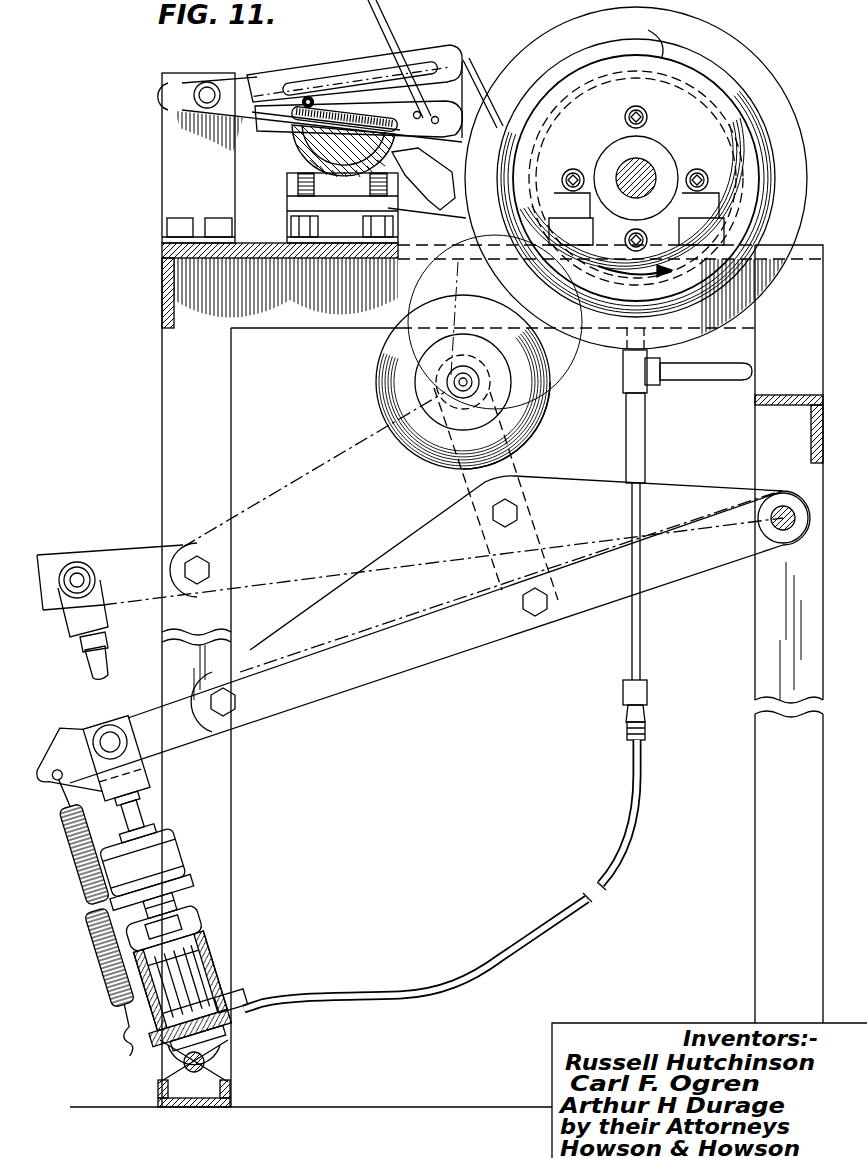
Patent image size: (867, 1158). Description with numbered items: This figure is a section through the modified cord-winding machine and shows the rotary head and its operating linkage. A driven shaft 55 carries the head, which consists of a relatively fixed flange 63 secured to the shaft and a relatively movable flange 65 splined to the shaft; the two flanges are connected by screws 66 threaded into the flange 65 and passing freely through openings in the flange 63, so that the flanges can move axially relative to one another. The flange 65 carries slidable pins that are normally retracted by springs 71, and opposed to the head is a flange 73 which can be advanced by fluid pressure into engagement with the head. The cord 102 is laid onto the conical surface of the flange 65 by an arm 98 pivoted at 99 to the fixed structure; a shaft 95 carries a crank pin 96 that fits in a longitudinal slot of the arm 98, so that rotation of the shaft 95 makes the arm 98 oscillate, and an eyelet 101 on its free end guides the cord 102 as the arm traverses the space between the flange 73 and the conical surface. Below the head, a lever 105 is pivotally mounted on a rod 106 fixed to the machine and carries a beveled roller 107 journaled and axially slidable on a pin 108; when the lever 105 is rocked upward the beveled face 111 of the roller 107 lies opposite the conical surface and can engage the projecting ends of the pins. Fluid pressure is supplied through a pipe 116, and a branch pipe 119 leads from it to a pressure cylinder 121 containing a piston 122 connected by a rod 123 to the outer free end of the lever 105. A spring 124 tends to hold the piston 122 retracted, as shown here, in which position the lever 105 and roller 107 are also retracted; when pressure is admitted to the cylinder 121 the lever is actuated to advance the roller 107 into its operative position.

The shaft 55 is at (644, 170).
The relatively fixed flange 63 is at (598, 129).
The relatively movable flange 65 is at (576, 63).
The screws 66 is at (648, 117).
The springs 71 is at (636, 163).
The flange 73 is at (732, 58).
The shaft 95 is at (318, 157).
The crank pin 96 is at (308, 96).
The arm 98 is at (242, 92).
The pivot 99 is at (207, 86).
The eyelet 101 is at (480, 95).
The cord 102 is at (392, 24).
The lever 105 is at (436, 658).
The rod 106 is at (783, 505).
The beveled roller 107 is at (388, 380).
The pin 108 is at (453, 394).
The beveled face 111 is at (540, 393).
The pipe 116 is at (628, 357).
The branch pipe 119 is at (646, 638).
The pressure cylinder 121 is at (206, 976).
The piston 122 is at (200, 940).
The rod 123 is at (148, 820).
The spring 124 is at (97, 938).